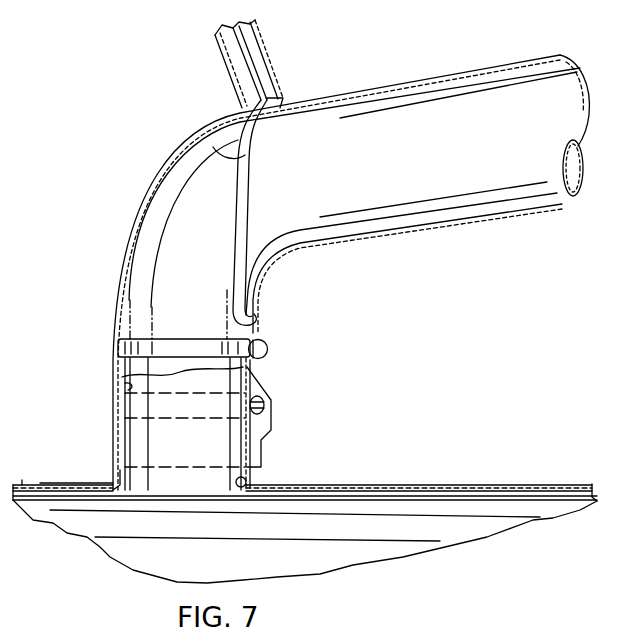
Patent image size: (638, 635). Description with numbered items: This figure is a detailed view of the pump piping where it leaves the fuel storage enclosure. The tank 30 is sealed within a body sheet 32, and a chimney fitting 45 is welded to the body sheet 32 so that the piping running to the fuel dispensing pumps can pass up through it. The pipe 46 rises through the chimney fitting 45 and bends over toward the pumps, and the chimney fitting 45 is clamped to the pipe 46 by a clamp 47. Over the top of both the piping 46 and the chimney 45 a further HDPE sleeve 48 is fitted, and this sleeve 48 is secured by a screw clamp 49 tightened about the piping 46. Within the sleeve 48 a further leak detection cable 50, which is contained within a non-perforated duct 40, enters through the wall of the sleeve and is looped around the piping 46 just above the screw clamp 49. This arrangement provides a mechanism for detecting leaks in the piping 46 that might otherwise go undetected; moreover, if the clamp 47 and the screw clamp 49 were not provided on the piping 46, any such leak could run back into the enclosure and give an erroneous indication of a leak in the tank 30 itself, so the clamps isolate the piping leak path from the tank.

The tank 30 is at (460, 508).
The body sheet 32 is at (365, 490).
The non-perforated duct 40 is at (268, 60).
The chimney fitting 45 is at (237, 483).
The pipe 46 is at (142, 233).
The clamp 47 is at (252, 384).
The HDPE sleeve 48 is at (303, 248).
The screw clamp 49 is at (173, 346).
The leak detection cable 50 is at (216, 132).